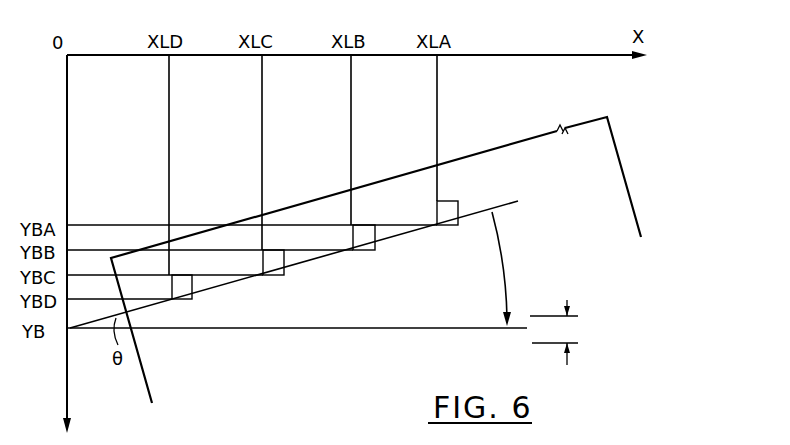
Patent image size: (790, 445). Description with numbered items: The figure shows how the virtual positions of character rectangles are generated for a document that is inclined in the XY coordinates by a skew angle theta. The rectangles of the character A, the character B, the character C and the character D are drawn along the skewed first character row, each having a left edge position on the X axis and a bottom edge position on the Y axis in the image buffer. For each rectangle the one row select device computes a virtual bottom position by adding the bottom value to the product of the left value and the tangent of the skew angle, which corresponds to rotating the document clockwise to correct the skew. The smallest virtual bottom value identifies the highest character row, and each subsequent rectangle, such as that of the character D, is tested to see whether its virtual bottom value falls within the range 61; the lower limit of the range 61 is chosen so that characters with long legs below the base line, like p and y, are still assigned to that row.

The range 61 is at (568, 334).
The character A is at (447, 214).
The character B is at (364, 238).
The character C is at (273, 263).
The character D is at (182, 288).